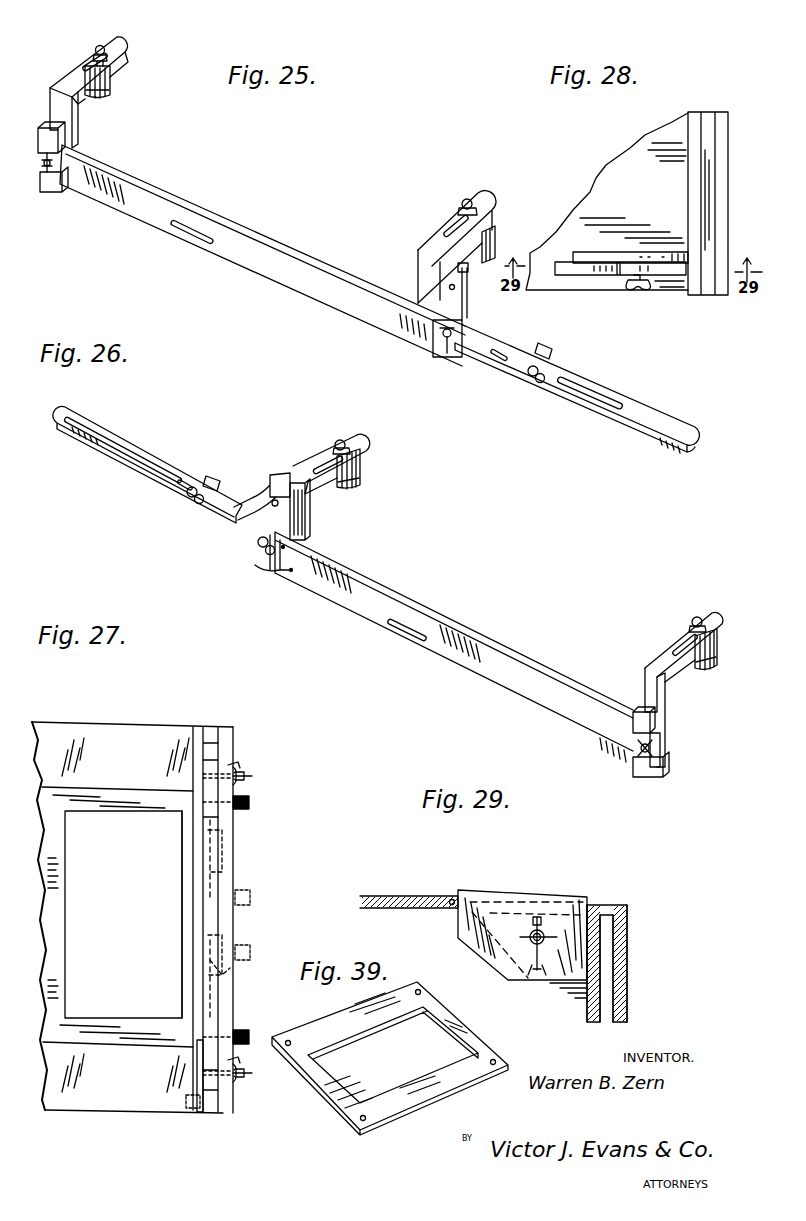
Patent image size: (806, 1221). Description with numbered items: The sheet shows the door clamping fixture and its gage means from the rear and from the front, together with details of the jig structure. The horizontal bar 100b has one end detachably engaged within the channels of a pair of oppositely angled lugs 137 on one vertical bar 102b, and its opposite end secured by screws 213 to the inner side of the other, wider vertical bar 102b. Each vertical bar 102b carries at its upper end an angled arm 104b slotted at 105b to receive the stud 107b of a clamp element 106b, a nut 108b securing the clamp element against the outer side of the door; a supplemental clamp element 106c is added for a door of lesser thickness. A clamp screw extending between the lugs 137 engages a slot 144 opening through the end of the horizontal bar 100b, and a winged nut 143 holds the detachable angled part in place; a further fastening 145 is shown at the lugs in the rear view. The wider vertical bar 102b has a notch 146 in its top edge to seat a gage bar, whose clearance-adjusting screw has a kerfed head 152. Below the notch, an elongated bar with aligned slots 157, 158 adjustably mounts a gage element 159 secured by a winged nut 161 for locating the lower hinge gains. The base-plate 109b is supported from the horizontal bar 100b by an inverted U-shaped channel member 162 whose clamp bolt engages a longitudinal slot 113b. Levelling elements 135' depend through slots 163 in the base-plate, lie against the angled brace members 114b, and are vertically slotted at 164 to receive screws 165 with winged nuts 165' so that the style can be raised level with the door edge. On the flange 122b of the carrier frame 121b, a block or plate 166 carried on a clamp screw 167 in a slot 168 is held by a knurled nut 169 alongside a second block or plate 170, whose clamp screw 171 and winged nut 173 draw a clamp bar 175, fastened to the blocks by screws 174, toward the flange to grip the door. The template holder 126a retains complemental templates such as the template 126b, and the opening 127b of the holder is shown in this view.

In FIG. 25, the horizontal bar 100b is at (248, 229).
In FIG. 26, the horizontal bar 100b is at (488, 652).
In FIG. 25, the vertical bar 102b is at (75, 120).
In FIG. 26, the vertical bar 102b is at (307, 505).
In FIG. 25, the angled arm 104b is at (122, 41).
In FIG. 26, the angled arm 104b is at (300, 478).
In FIG. 25, the slot 105b is at (86, 64).
In FIG. 26, the slot 105b is at (358, 449).
In FIG. 25, the clamp element 106b is at (448, 218).
In FIG. 26, the clamp element 106b is at (362, 466).
In FIG. 25, the supplemental clamp element 106c is at (110, 92).
In FIG. 26, the supplemental clamp element 106c is at (361, 486).
In FIG. 25, the stud 107b is at (101, 46).
In FIG. 26, the stud 107b is at (337, 441).
In FIG. 25, the nut 108b is at (95, 52).
In FIG. 26, the nut 108b is at (343, 440).
In FIG. 29, the base-plate 109b is at (386, 896).
In FIG. 26, the slot 113b is at (400, 633).
In FIG. 28, the angled brace member 114b is at (596, 252).
In FIG. 29, the angled brace member 114b is at (573, 993).
In FIG. 27, the carrier frame 121b is at (66, 728).
In FIG. 27, the flange 122b is at (228, 748).
In FIG. 39, the template holder 126a is at (390, 1103).
In FIG. 27, the template 126b is at (110, 813).
In FIG. 27, the window opening 127b is at (73, 943).
In FIG. 28, the levelling element 135' is at (620, 294).
In FIG. 29, the levelling element 135' is at (522, 909).
In FIG. 25, the angled lug 137 is at (40, 136).
In FIG. 26, the angled lug 137 is at (636, 712).
In FIG. 26, the winged nut 143 is at (640, 748).
In FIG. 26, the slot 144 is at (661, 750).
In FIG. 25, the clamp screw 145 is at (43, 162).
In FIG. 26, the notch 146 is at (262, 488).
In FIG. 26, the kerfed head 152 is at (279, 505).
In FIG. 25, the slot 157 is at (497, 360).
In FIG. 26, the slot 157 is at (193, 511).
In FIG. 25, the slot 158 is at (622, 416).
In FIG. 26, the slot 158 is at (72, 418).
In FIG. 25, the gage element 159 is at (553, 350).
In FIG. 26, the gage element 159 is at (208, 478).
In FIG. 25, the winged nut 161 is at (535, 383).
In FIG. 26, the winged nut 161 is at (186, 496).
In FIG. 28, the channel member 162 is at (722, 190).
In FIG. 29, the channel member 162 is at (628, 934).
In FIG. 29, the slot 163 is at (451, 897).
In FIG. 29, the vertical slot 164 is at (537, 960).
In FIG. 29, the screw 165 is at (552, 913).
In FIG. 28, the winged nut 165' is at (652, 303).
In FIG. 29, the winged nut 165' is at (578, 905).
In FIG. 27, the block or plate 166 is at (216, 730).
In FIG. 27, the clamp screw 167 is at (228, 970).
In FIG. 27, the slot 168 is at (222, 840).
In FIG. 27, the knurled nut 169 is at (250, 805).
In FIG. 27, the block or plate 170 is at (206, 727).
In FIG. 27, the clamp screw 171 is at (252, 778).
In FIG. 27, the winged nut 173 is at (240, 770).
In FIG. 27, the screw 174 is at (185, 1108).
In FIG. 27, the clamp bar 175 is at (200, 1114).
In FIG. 26, the screw 213 is at (262, 566).